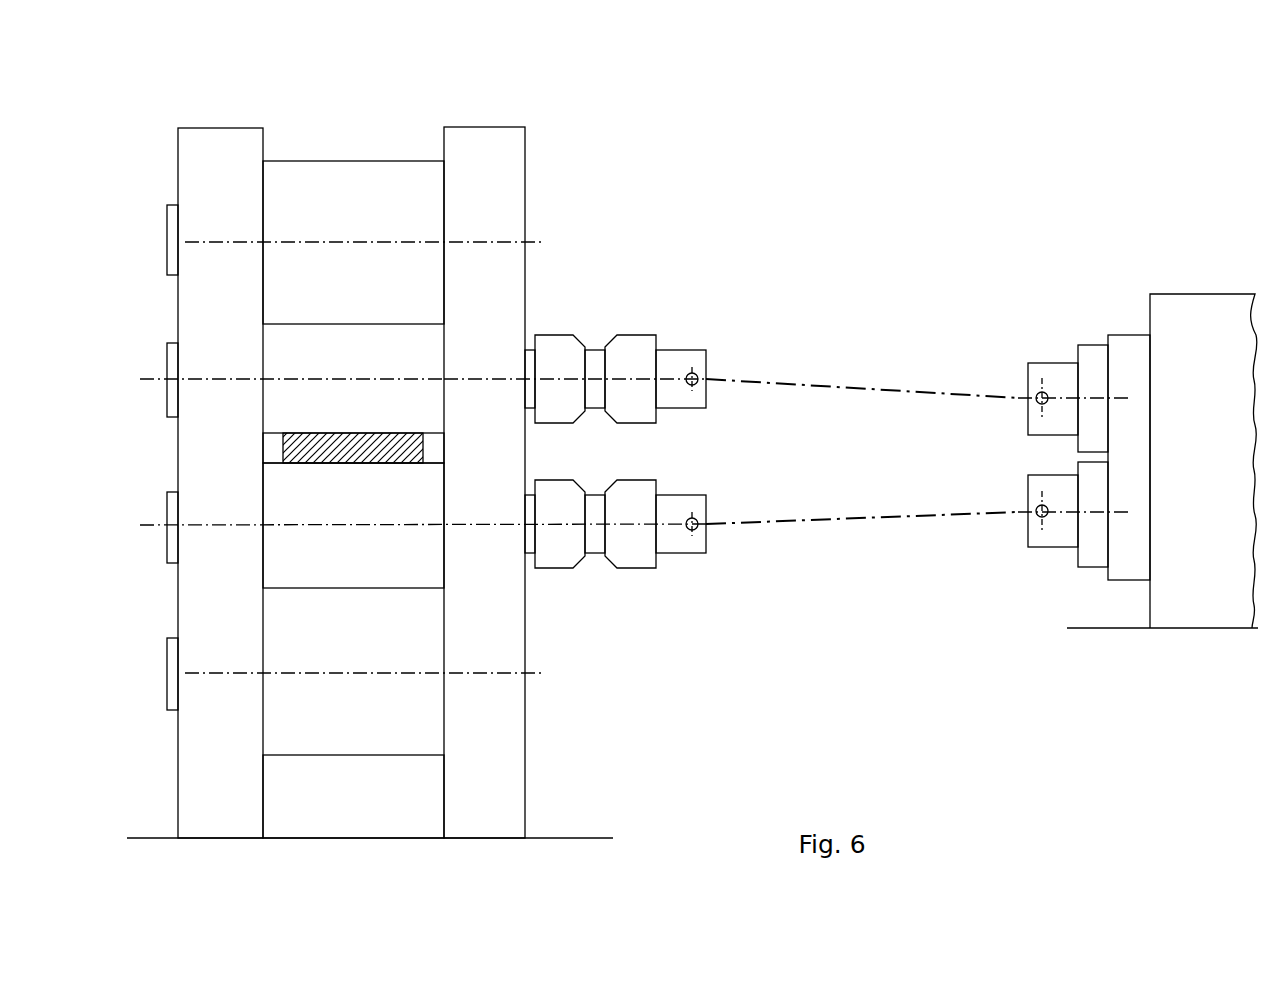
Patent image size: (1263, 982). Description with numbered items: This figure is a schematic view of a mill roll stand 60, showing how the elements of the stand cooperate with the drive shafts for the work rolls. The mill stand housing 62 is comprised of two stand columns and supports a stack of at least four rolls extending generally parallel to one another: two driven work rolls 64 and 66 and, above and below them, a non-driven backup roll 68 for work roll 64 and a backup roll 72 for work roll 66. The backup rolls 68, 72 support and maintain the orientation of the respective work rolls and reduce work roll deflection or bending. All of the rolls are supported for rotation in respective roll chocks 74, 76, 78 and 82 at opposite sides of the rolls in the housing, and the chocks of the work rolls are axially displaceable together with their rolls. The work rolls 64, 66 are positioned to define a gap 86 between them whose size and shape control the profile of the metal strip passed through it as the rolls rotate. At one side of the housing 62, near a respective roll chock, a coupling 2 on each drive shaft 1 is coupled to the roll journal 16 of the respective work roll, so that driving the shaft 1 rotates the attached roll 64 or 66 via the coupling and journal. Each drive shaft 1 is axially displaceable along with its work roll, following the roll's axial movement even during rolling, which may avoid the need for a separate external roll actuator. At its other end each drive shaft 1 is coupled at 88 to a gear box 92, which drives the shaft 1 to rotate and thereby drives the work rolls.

The drive shaft 1 is at (930, 388).
The coupling 2 is at (636, 333).
The roll journal 16 is at (476, 382).
The optical module assembly 60 is at (545, 117).
The housing 62 is at (500, 207).
The work roll 64 is at (413, 418).
The work roll 66 is at (420, 552).
The backup roll 68 is at (377, 200).
The backup roll 72 is at (425, 722).
The roll chock 74 is at (167, 365).
The roll chock 76 is at (170, 563).
The roll chock 78 is at (167, 225).
The roll chock 82 is at (172, 706).
The gap 86 is at (273, 445).
The coupling to gear box 88 is at (1046, 363).
The gear box 92 is at (1180, 595).